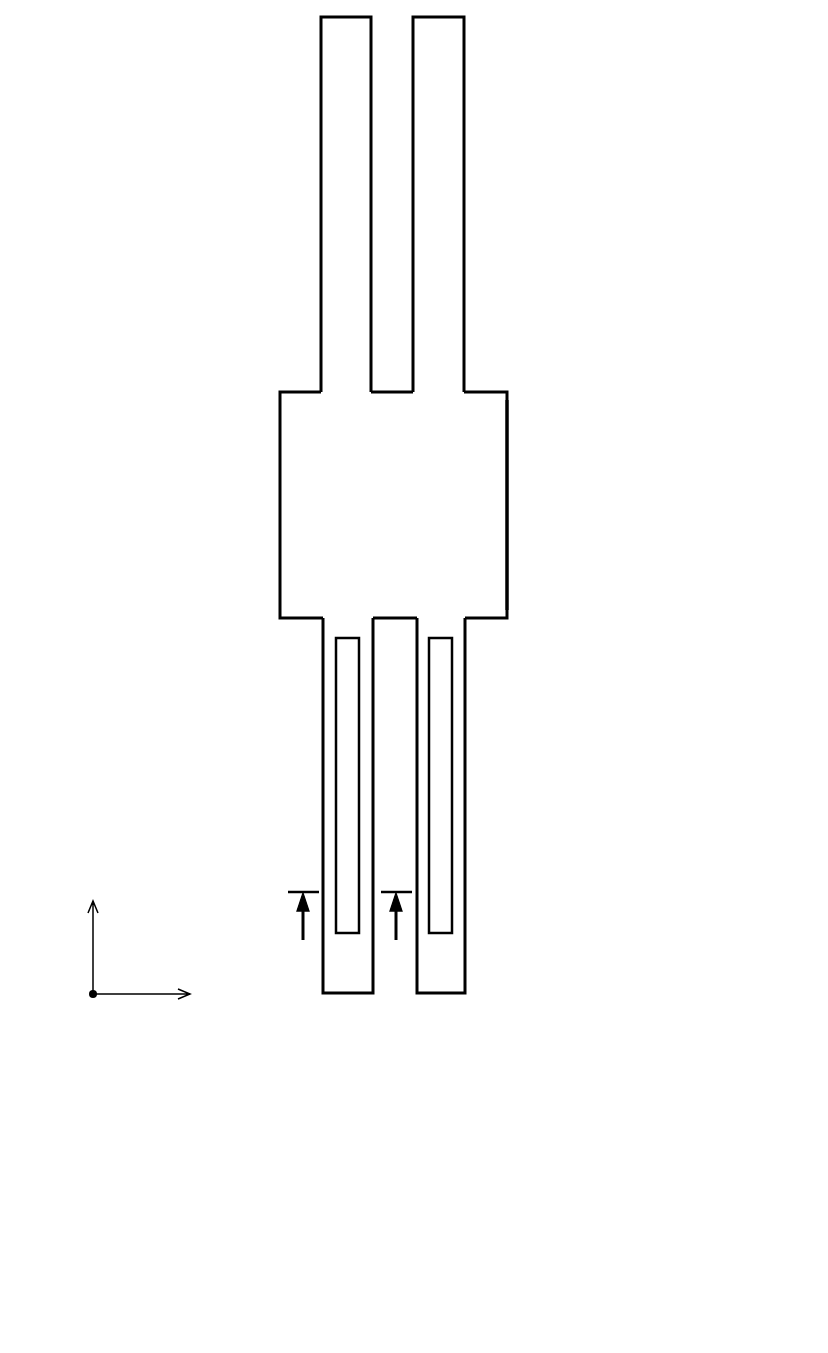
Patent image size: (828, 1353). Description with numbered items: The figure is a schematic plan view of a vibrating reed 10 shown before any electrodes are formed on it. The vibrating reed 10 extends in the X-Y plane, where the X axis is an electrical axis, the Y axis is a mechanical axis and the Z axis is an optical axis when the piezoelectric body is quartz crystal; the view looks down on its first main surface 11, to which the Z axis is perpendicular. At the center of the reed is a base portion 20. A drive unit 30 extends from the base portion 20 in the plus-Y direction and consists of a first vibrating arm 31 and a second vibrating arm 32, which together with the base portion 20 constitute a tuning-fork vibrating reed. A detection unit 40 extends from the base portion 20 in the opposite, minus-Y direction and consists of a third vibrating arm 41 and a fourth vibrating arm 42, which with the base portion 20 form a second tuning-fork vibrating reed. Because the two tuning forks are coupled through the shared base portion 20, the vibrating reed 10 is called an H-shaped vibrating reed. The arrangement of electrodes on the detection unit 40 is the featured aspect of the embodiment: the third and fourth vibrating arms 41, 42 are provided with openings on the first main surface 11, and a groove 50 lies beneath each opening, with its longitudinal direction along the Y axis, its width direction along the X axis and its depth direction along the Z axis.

The vibrating reed 10 is at (589, 316).
The first main surface 11 is at (295, 511).
The base portion 20 is at (486, 455).
The drive unit 30 is at (524, 63).
The first vibrating arm 31 is at (321, 209).
The second vibrating arm 32 is at (464, 205).
The detection unit 40 is at (415, 1028).
The third vibrating arm 41 is at (322, 815).
The fourth vibrating arm 42 is at (467, 812).
The groove 50 is at (345, 719).